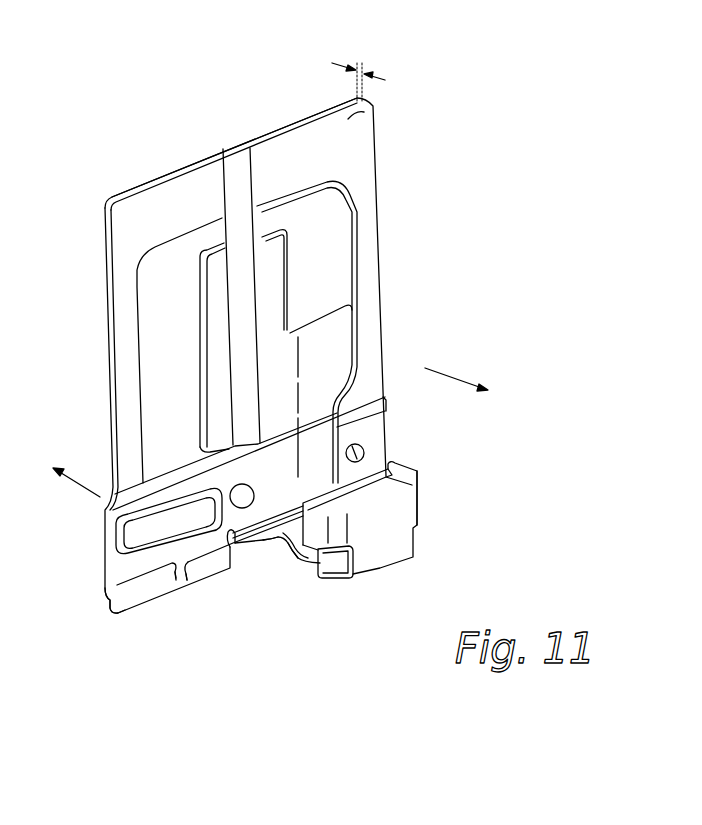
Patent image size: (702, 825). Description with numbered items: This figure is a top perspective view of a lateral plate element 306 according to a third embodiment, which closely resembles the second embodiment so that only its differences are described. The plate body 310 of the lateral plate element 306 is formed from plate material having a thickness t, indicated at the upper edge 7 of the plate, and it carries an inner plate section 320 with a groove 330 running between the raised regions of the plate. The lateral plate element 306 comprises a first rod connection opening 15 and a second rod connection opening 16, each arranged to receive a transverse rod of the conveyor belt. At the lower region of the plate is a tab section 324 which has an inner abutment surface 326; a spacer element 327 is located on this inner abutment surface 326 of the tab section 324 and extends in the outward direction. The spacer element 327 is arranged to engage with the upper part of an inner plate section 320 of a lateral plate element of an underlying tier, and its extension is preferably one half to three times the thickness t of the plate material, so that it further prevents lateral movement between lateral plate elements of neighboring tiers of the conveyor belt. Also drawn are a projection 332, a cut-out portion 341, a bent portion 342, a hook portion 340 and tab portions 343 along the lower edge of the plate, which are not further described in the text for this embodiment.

The lateral plate element 306 is at (449, 118).
The plate portion 310 is at (373, 107).
The top edge 7 is at (311, 115).
The thickness t is at (358, 72).
The inner plate section 320 is at (160, 190).
The groove 330 is at (237, 163).
The first rod connection opening 15 is at (364, 456).
The second rod connection opening 16 is at (238, 497).
The tab section 324 is at (130, 606).
The spacer element 327 is at (115, 617).
The inner abutment surface 326 is at (190, 580).
The projection 332 is at (233, 548).
The cut-out portion 341 is at (272, 542).
The bent portion 342 is at (291, 556).
The hook portion 340 is at (382, 524).
The tab 343 is at (423, 497).